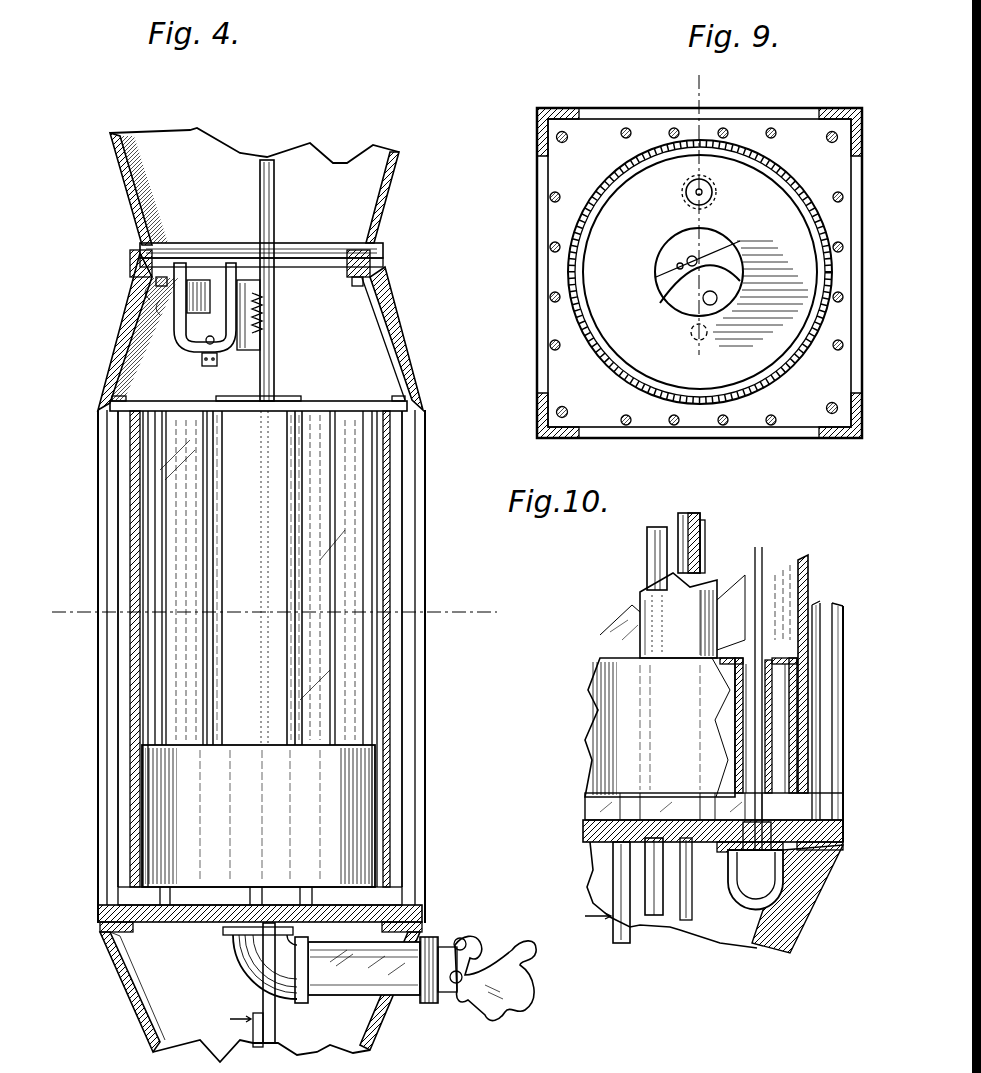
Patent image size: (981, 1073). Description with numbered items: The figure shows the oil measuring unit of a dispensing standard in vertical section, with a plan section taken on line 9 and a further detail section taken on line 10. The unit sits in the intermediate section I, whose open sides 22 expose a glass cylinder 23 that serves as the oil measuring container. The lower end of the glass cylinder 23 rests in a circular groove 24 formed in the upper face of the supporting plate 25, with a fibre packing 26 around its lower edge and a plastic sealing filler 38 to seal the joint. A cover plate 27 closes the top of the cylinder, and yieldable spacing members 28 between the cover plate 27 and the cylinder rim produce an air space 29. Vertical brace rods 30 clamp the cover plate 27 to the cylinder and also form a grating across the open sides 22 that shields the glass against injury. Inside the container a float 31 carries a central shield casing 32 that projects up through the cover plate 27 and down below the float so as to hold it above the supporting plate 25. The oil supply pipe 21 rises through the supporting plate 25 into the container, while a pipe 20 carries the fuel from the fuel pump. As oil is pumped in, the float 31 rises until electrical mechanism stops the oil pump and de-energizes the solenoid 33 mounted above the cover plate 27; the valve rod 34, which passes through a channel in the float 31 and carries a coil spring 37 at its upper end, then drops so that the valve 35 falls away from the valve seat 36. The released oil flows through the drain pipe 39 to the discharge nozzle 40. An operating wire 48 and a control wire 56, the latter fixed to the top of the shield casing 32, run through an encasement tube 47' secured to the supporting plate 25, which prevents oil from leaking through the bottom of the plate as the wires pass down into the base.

In FIG. 4, the intermediate section I is at (422, 527).
In FIG. 9, the intermediate section I is at (539, 406).
In FIG. 10, the intermediate section I is at (843, 727).
In FIG. 4, the section line 9— 9 is at (267, 612).
In FIG. 9, the section line 10— 10 is at (701, 218).
In FIG. 4, the pipe 20 is at (267, 192).
In FIG. 9, the pipe 20 is at (731, 287).
In FIG. 10, the pipe 20 is at (650, 555).
In FIG. 4, the oil supply pipe 21 is at (258, 1027).
In FIG. 9, the oil supply pipe 21 is at (693, 333).
In FIG. 10, the oil supply pipe 21 is at (617, 928).
In FIG. 4, the open sides 22 is at (412, 730).
In FIG. 9, the open sides 22 is at (544, 251).
In FIG. 4, the glass cylinder 23 is at (390, 680).
In FIG. 9, the glass cylinder 23 is at (830, 272).
In FIG. 10, the glass cylinder 23 is at (808, 583).
In FIG. 4, the circular groove 24 is at (421, 919).
In FIG. 10, the circular groove 24 is at (843, 830).
In FIG. 4, the supporting plate 25 is at (182, 923).
In FIG. 10, the supporting plate 25 is at (585, 830).
In FIG. 4, the packing 26 is at (97, 926).
In FIG. 4, the cover plate 27 is at (348, 404).
In FIG. 4, the yieldable spacing members 28 is at (413, 398).
In FIG. 4, the air space 29 is at (313, 407).
In FIG. 4, the brace rods 30 is at (402, 563).
In FIG. 9, the brace rods 30 is at (554, 200).
In FIG. 10, the brace rods 30 is at (822, 645).
In FIG. 4, the float 31 is at (320, 760).
In FIG. 9, the float 31 is at (782, 217).
In FIG. 10, the float 31 is at (598, 733).
In FIG. 4, the shield casing 32 is at (290, 571).
In FIG. 10, the shield casing 32 is at (640, 592).
In FIG. 4, the solenoid 33 is at (195, 280).
In FIG. 4, the valve rod 34 is at (253, 333).
In FIG. 9, the valve rod 34 is at (694, 195).
In FIG. 10, the valve rod 34 is at (760, 563).
In FIG. 10, the valve 35 is at (755, 880).
In FIG. 10, the valve seat 36 is at (815, 849).
In FIG. 9, the coil spring 37 is at (715, 195).
In FIG. 10, the coil spring 37 is at (762, 707).
In FIG. 4, the sealing filler 38 is at (413, 896).
In FIG. 10, the sealing filler 38 is at (840, 807).
In FIG. 4, the drain pipe 39 is at (350, 992).
In FIG. 4, the discharge nozzle 40 is at (463, 993).
In FIG. 10, the encasement tube 47' is at (724, 546).
In FIG. 9, the operating wire 48 is at (686, 248).
In FIG. 10, the operating wire 48 is at (693, 513).
In FIG. 9, the control wire 56 is at (671, 258).
In FIG. 10, the control wire 56 is at (683, 520).